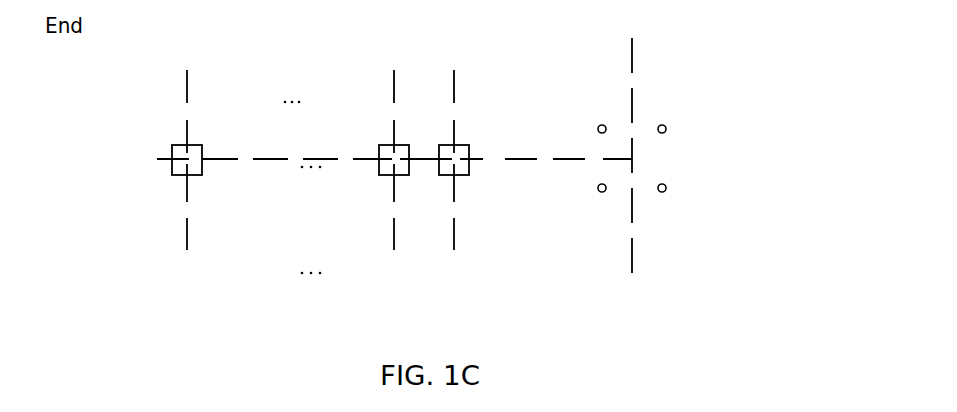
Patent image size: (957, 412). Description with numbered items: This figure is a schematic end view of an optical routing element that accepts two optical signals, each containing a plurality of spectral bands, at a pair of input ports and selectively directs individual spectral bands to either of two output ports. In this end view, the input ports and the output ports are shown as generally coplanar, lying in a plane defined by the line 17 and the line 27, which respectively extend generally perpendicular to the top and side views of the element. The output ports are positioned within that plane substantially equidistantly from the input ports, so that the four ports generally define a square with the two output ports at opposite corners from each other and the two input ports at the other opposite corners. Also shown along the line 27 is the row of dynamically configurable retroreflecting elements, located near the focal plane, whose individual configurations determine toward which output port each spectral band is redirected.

The line 27 is at (172, 152).
The line 17 is at (633, 53).